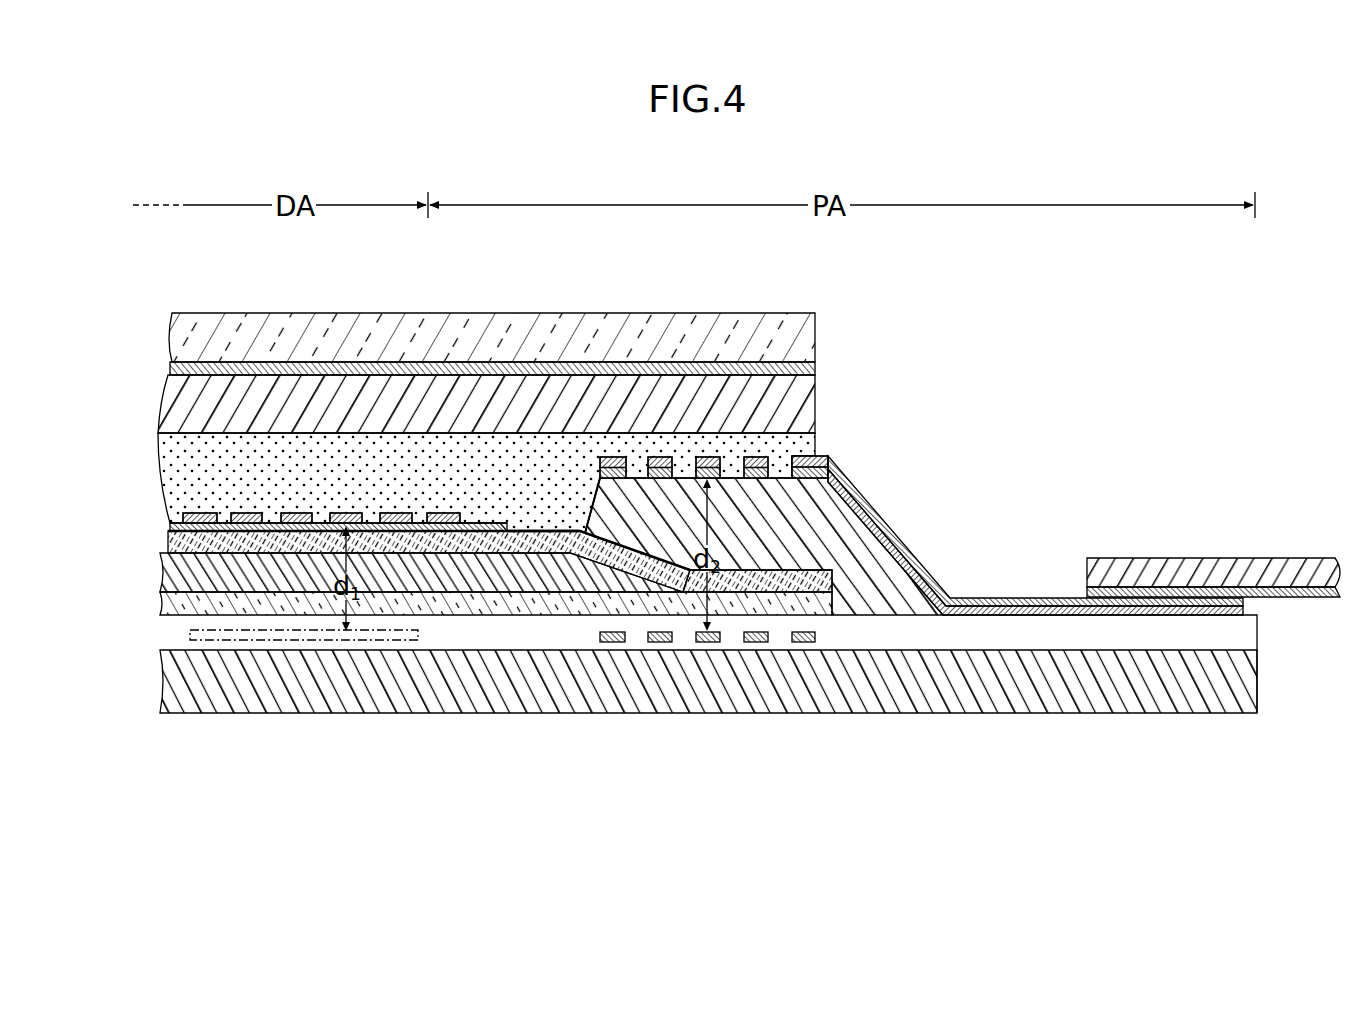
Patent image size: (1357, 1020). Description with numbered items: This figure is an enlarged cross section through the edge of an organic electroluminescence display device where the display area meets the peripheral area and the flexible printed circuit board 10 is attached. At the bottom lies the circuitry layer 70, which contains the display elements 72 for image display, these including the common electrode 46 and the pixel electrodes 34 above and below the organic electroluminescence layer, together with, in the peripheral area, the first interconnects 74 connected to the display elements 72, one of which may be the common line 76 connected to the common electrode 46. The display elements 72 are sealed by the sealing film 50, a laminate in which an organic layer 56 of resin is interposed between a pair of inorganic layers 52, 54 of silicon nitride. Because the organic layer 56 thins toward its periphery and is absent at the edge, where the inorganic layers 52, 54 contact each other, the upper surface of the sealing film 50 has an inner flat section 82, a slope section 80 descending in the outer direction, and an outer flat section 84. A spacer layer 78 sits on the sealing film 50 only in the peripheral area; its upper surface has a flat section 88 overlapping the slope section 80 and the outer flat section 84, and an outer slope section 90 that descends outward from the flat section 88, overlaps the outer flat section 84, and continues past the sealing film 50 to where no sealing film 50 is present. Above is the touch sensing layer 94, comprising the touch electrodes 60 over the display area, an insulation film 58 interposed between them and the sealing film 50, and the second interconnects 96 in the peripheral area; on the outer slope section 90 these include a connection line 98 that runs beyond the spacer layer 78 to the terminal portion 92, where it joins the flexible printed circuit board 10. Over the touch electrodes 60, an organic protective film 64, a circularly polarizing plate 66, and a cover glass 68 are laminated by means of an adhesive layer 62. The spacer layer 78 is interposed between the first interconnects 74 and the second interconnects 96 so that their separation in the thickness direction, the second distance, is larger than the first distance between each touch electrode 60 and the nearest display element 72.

The flexible printed circuit board 10 is at (1225, 566).
The sealing film 50 is at (96, 530).
The inorganic layer 52 is at (172, 603).
The inorganic layer 54 is at (183, 540).
The organic layer 56 is at (178, 573).
The pixel defining layer 58 is at (230, 509).
The touch electrodes 60 is at (405, 510).
The adhesive layer 62 is at (183, 486).
The organic protective film 64 is at (182, 405).
The circularly polarizing plate 66 is at (182, 371).
The cover glass 68 is at (182, 338).
The circuitry layer 70 is at (158, 643).
The display elements 72 is at (304, 701).
The common electrode 46 is at (304, 701).
The pixel electrodes 34 is at (255, 643).
The first interconnects 74 is at (596, 637).
The common line 76 is at (706, 643).
The spacer layer 78 is at (863, 594).
The slope section 80 is at (639, 540).
The inner flat section 82 is at (549, 530).
The outer flat section 84 is at (776, 571).
The flat section 88 is at (786, 470).
The outer slope section 90 is at (855, 493).
The terminal portion 92 is at (1105, 619).
The touch sensing layer 94 is at (163, 515).
The second interconnects 96 is at (709, 455).
The connection line 98 is at (892, 531).